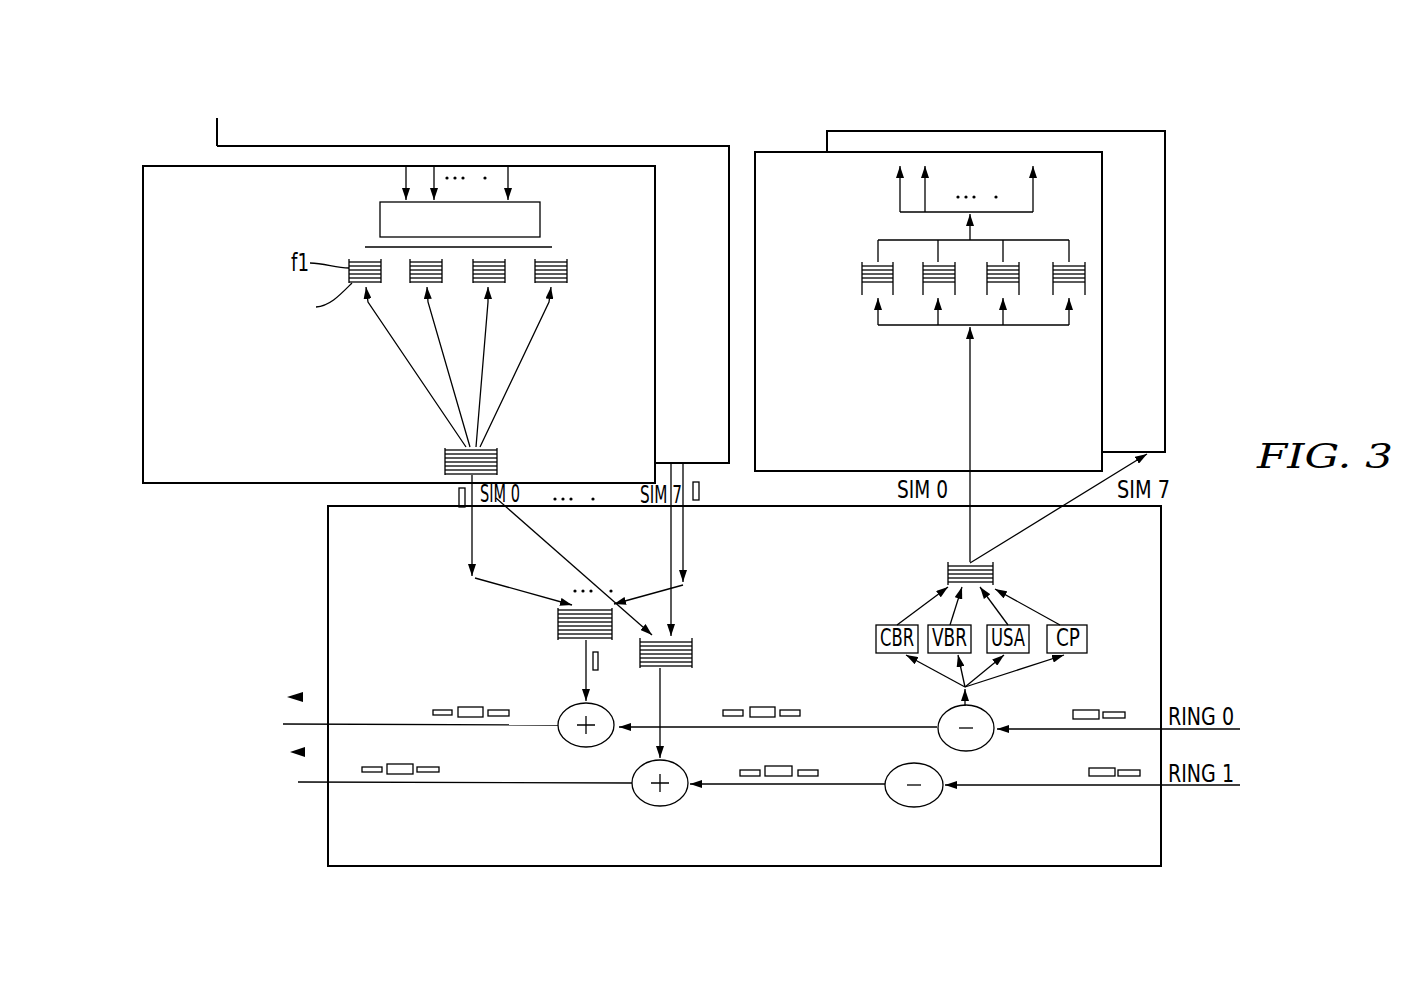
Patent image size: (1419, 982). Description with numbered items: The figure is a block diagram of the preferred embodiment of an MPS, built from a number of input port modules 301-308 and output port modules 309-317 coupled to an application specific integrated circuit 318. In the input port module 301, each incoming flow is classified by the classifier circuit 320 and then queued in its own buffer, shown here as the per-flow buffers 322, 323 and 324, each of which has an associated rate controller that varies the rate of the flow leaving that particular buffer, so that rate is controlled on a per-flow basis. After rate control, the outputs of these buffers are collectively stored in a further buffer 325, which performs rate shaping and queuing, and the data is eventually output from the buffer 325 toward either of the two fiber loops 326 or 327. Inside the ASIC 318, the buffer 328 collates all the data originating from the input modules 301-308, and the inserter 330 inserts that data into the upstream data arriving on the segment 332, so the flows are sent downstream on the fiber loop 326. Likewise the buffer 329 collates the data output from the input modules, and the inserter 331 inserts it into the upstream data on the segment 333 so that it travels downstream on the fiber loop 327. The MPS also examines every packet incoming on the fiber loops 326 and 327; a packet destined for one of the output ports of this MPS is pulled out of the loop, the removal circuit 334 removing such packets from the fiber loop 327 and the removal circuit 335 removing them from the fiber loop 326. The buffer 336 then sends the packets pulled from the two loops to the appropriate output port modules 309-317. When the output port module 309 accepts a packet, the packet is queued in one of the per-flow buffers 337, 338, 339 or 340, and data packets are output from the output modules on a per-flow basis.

The input port module 301 is at (177, 141).
The input port module 308 is at (337, 144).
The output port module 309 is at (786, 150).
The output port module 317 is at (947, 129).
The application specific integrated circuit 318 is at (326, 591).
The classifier circuit 320 is at (540, 221).
The buffer 322 is at (411, 284).
The buffer 323 is at (474, 284).
The buffer 324 is at (567, 272).
The buffer 325 is at (497, 462).
The fiber loop 326 is at (393, 723).
The fiber loop 327 is at (510, 784).
The buffer 328 is at (556, 622).
The buffer 329 is at (694, 652).
The inserter 330 is at (567, 705).
The inserter 331 is at (684, 800).
The segment 332 is at (856, 727).
The segment 333 is at (851, 787).
The removal circuit 334 is at (936, 800).
The removal circuit 335 is at (992, 714).
The buffer 336 is at (995, 578).
The buffer 337 is at (860, 275).
The buffer 338 is at (923, 293).
The buffer 339 is at (1019, 294).
The buffer 340 is at (1086, 284).